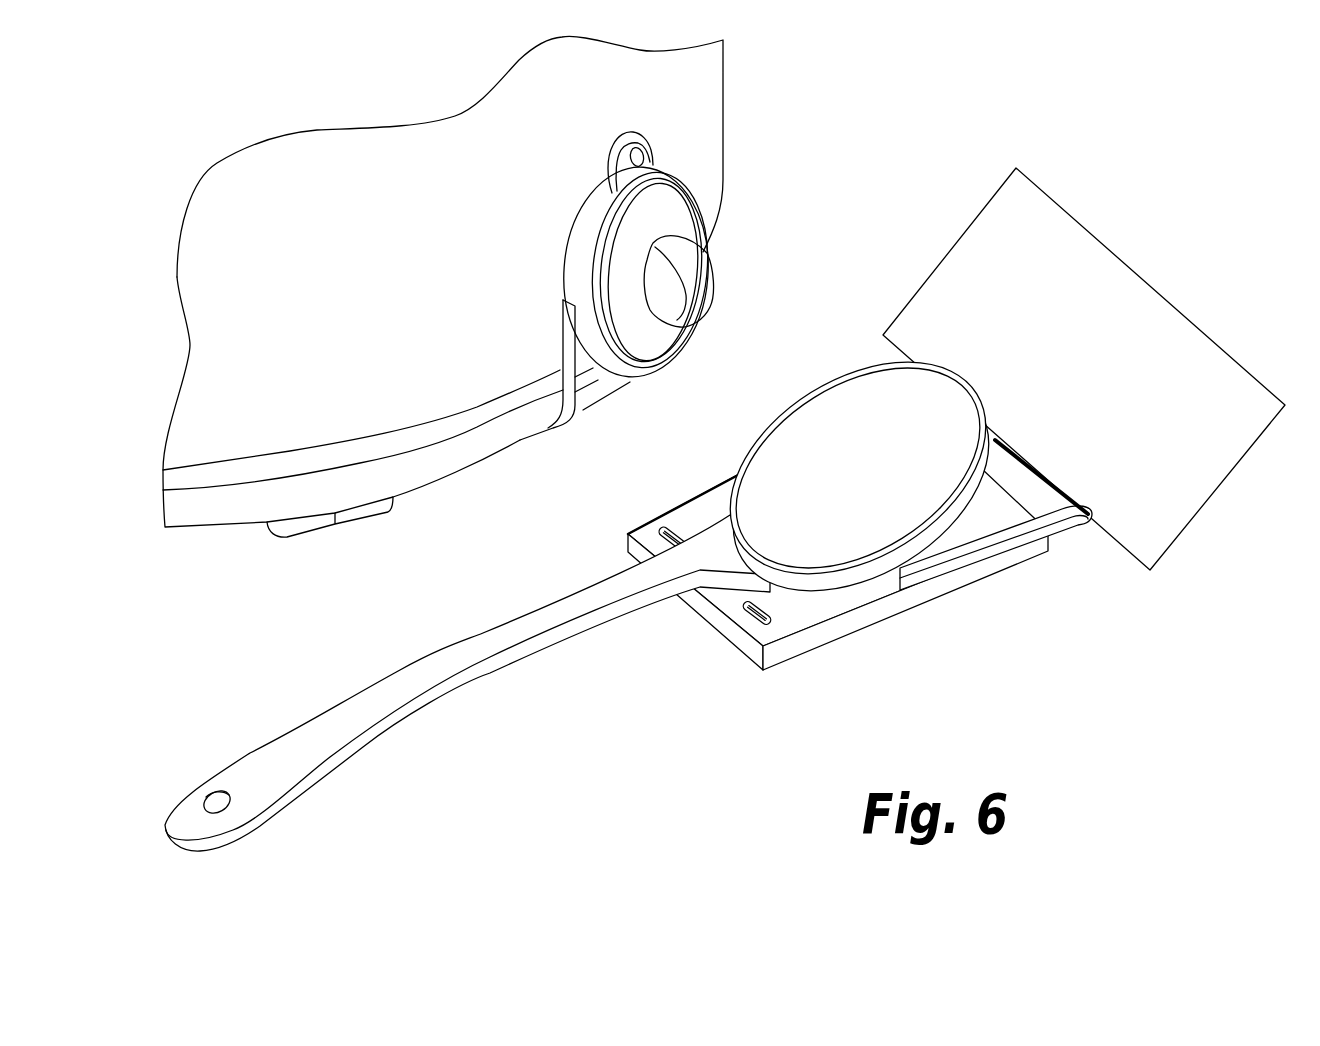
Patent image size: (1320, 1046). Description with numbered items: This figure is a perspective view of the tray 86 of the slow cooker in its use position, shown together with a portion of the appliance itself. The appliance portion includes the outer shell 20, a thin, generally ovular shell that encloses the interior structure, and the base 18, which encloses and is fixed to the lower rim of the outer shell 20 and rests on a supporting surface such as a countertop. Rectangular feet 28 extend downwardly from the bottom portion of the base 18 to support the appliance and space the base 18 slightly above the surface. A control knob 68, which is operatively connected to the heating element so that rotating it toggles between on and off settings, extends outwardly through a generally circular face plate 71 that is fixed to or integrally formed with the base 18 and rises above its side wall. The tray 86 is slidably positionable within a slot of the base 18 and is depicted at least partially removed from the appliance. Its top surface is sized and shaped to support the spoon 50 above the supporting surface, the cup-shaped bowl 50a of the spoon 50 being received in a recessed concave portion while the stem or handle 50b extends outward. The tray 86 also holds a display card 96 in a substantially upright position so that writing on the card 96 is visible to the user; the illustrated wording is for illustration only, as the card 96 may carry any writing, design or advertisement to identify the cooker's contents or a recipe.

The base 18 is at (183, 482).
The outer shell 20 is at (386, 326).
The feet 28 is at (268, 523).
The spoon 50 is at (628, 529).
The bowl 50a is at (850, 393).
The handle 50b is at (293, 787).
The control knob 68 is at (580, 250).
The face plate 71 is at (580, 260).
The tray 86 is at (882, 605).
The display card 96 is at (1205, 333).